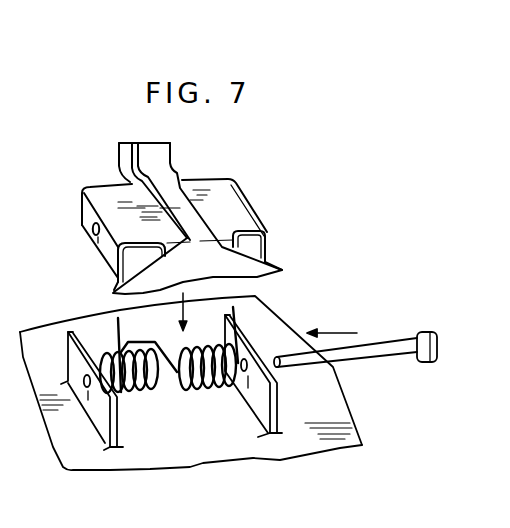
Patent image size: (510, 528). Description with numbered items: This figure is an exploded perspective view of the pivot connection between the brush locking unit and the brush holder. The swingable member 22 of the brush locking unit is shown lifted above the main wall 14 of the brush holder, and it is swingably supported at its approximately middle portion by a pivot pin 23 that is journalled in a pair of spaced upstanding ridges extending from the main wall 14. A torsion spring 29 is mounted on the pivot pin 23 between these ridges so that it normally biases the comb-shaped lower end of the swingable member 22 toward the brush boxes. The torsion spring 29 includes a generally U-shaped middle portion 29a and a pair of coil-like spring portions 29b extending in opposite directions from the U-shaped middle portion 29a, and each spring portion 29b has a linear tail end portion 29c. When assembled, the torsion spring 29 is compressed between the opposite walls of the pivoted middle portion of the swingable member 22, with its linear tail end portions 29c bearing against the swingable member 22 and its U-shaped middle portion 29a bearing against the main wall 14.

The swingable member 22 is at (197, 184).
The main wall 14 is at (287, 332).
The torsion spring 29 is at (108, 343).
The U-shaped middle portion 29a is at (166, 334).
The spring portions 29b is at (212, 388).
The linear tail end portion 29c is at (280, 339).
The pivot pin 23 is at (371, 348).